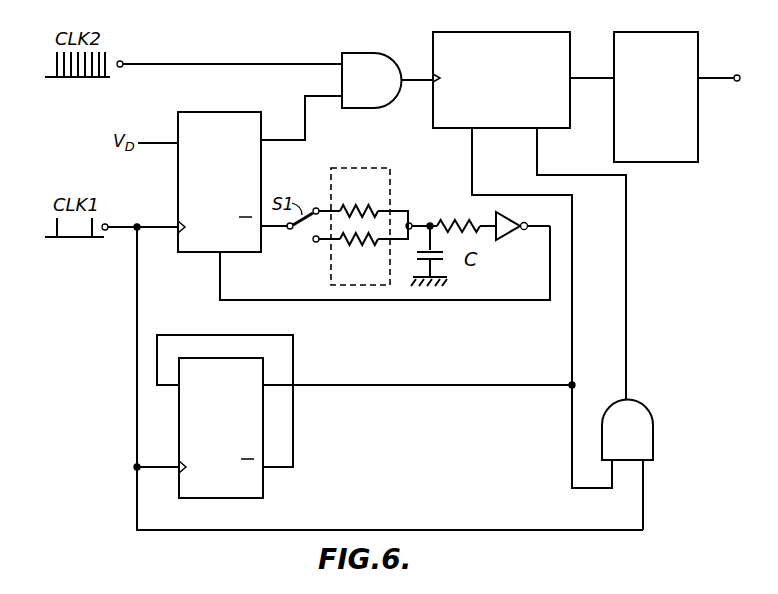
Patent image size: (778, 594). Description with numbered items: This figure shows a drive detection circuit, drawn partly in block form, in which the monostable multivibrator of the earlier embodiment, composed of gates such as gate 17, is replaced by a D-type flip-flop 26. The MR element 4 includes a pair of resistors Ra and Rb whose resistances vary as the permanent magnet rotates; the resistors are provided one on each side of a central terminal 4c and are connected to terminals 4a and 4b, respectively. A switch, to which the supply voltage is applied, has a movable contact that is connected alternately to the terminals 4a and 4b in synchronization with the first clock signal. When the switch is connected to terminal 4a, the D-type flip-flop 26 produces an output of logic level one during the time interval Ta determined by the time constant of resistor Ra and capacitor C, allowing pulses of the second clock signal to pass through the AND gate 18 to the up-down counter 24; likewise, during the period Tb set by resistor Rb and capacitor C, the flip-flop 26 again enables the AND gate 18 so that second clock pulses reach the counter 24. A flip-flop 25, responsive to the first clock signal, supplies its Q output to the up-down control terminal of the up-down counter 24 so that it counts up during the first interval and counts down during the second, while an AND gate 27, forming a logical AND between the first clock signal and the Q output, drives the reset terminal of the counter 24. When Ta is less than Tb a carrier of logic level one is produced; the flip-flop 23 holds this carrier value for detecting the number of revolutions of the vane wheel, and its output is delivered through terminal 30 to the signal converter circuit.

The MR element 4 is at (390, 180).
The terminal 4a is at (316, 207).
The terminal 4b is at (315, 243).
The central terminal 4c is at (413, 222).
The gate 17 is at (520, 220).
The AND gate 18 is at (365, 52).
The flip-flop 23 is at (660, 32).
The up-down counter 24 is at (530, 32).
The flip-flop 25 is at (264, 487).
The D-type flip-flop 26 is at (232, 112).
The AND gate 27 is at (650, 418).
The terminal 30 is at (735, 74).